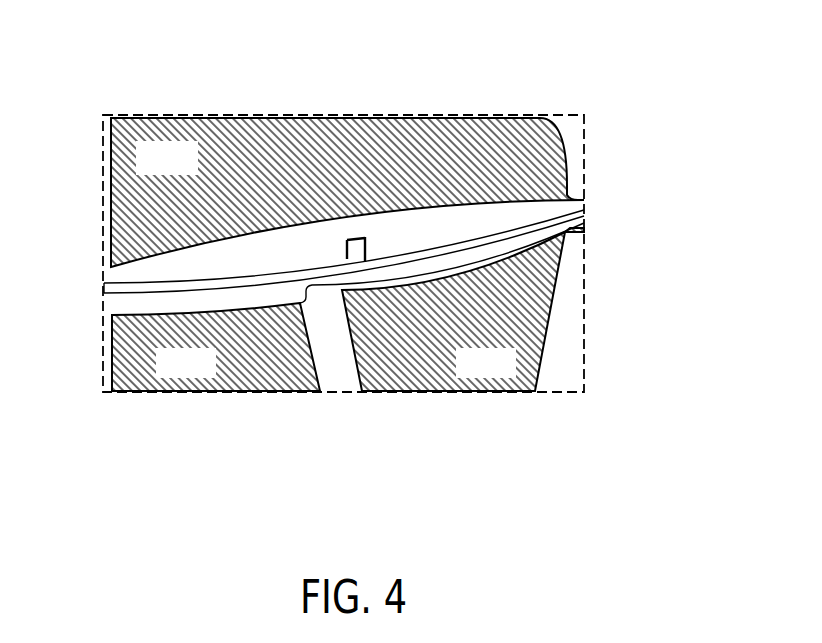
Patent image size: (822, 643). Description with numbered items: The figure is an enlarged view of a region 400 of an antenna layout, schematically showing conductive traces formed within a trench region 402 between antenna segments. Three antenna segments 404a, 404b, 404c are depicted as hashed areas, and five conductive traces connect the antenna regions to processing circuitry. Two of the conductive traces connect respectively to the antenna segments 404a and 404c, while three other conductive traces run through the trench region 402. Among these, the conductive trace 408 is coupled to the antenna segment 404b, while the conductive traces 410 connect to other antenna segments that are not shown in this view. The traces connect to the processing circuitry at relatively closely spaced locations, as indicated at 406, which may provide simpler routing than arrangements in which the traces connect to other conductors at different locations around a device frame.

The region 400 is at (646, 81).
The trench region 402 is at (122, 303).
The antenna segment 404a is at (190, 170).
The antenna segment 404b is at (208, 374).
The antenna segment 404c is at (508, 374).
The closely spaced locations 406 is at (626, 222).
The conductive trace 408 is at (397, 265).
The conductive traces 410 is at (365, 238).